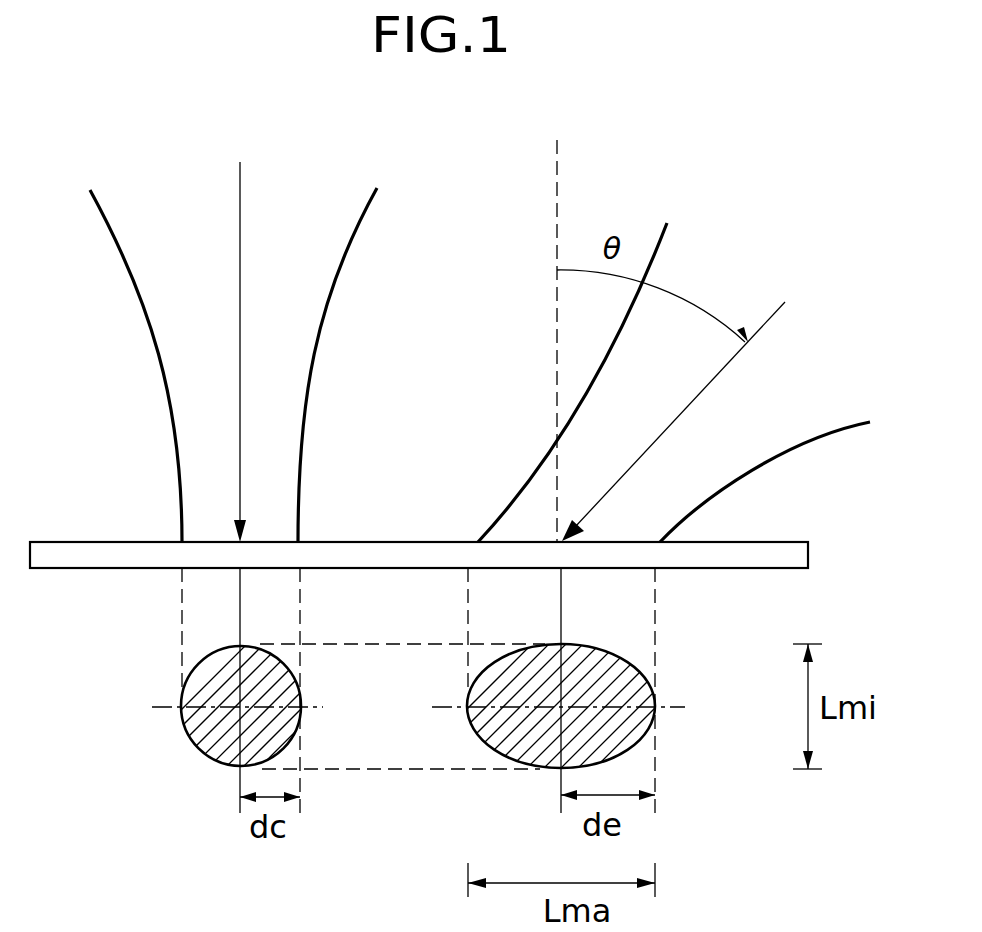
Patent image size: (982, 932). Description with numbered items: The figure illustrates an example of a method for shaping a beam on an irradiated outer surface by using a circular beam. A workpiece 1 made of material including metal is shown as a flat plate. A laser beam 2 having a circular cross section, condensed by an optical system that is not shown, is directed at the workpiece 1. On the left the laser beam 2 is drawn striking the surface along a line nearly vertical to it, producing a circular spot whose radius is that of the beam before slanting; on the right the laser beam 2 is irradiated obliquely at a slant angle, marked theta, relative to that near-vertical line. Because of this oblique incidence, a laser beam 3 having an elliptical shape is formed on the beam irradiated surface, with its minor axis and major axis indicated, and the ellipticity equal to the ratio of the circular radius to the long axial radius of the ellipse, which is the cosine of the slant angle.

The workpiece 1 is at (809, 552).
The laser beam 2 is at (163, 388).
The elliptically shaped laser beam 3 is at (637, 665).